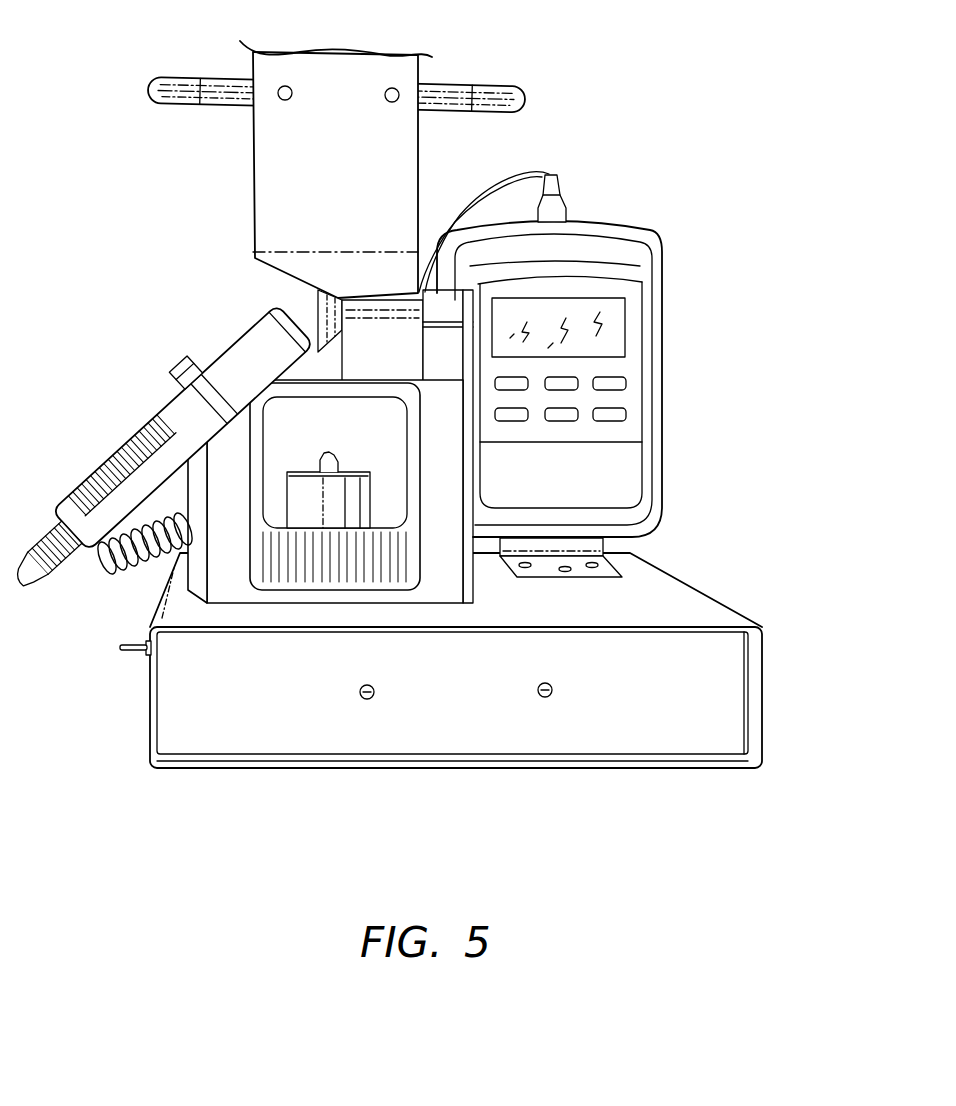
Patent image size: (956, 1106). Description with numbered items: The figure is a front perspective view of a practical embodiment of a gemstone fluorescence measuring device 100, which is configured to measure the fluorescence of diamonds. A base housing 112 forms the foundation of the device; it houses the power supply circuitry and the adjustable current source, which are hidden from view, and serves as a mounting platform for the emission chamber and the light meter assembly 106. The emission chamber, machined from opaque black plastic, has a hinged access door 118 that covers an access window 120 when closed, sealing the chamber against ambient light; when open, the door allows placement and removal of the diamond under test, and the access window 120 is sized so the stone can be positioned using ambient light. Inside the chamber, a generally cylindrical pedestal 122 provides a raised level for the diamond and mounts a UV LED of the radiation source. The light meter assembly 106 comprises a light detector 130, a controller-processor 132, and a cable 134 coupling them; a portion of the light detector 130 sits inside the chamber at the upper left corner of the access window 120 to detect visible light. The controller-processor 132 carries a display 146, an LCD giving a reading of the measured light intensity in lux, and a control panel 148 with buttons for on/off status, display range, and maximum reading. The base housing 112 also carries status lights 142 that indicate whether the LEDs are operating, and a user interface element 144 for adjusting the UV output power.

The fluorescence measuring device 100 is at (403, 428).
The light meter assembly 106 is at (373, 355).
The base housing 112 is at (707, 598).
The hinged access door 118 is at (253, 207).
The access window 120 is at (405, 468).
The pedestal 122 is at (303, 510).
The light detector 130 is at (147, 423).
The controller-processor 132 is at (657, 267).
The cable 134 is at (531, 173).
The status lights 142 is at (365, 699).
The user interface element 144 is at (133, 653).
The display 146 is at (610, 333).
The control panel 148 is at (623, 400).